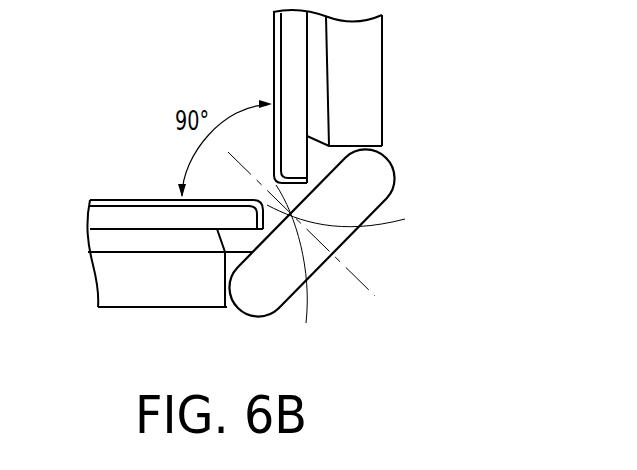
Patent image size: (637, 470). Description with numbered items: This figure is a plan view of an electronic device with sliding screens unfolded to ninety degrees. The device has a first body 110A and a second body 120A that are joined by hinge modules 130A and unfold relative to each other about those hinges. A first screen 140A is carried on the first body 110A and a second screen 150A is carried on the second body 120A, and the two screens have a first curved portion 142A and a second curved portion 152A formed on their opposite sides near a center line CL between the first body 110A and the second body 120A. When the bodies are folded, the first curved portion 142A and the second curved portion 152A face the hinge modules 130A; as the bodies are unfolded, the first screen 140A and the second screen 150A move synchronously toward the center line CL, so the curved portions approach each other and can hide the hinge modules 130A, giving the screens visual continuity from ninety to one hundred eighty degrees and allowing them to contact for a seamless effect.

The first body 110A is at (153, 287).
The first screen 140A is at (113, 213).
The second body 120A is at (373, 114).
The second screen 150A is at (288, 54).
The hinge modules 130A is at (380, 174).
The first curved portion 142A is at (306, 275).
The second curved portion 152A is at (364, 222).
The center line CL is at (319, 239).